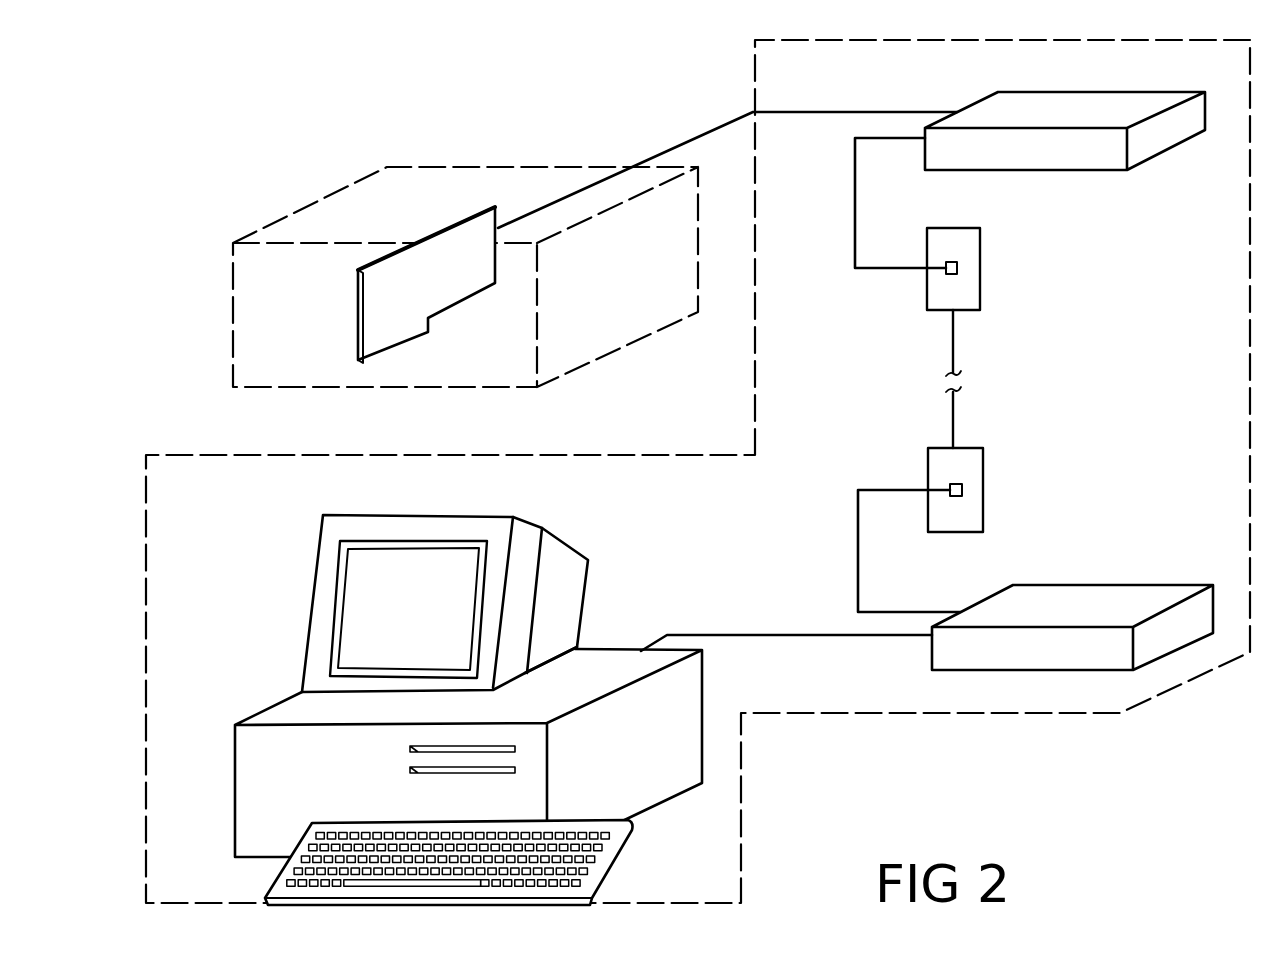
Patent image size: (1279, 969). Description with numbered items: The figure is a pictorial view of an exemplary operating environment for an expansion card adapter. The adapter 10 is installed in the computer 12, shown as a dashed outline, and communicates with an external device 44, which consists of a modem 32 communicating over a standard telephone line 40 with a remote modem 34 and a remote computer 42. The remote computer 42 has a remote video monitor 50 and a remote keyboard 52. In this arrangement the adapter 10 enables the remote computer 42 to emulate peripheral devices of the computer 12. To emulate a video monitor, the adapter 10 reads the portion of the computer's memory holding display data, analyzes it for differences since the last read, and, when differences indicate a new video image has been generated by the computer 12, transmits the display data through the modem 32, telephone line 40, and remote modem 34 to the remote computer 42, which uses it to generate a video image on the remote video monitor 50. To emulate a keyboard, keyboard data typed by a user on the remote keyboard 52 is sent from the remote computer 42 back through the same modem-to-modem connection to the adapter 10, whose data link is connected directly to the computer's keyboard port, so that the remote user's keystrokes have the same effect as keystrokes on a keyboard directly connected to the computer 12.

The adapter 10 is at (358, 320).
The computer 12 is at (437, 166).
The modem 32 is at (1005, 110).
The remote modem 34 is at (1120, 595).
The telephone line 40 is at (955, 352).
The remote computer 42 is at (607, 662).
The external device 44 is at (755, 84).
The remote video monitor 50 is at (323, 555).
The remote keyboard 52 is at (637, 834).